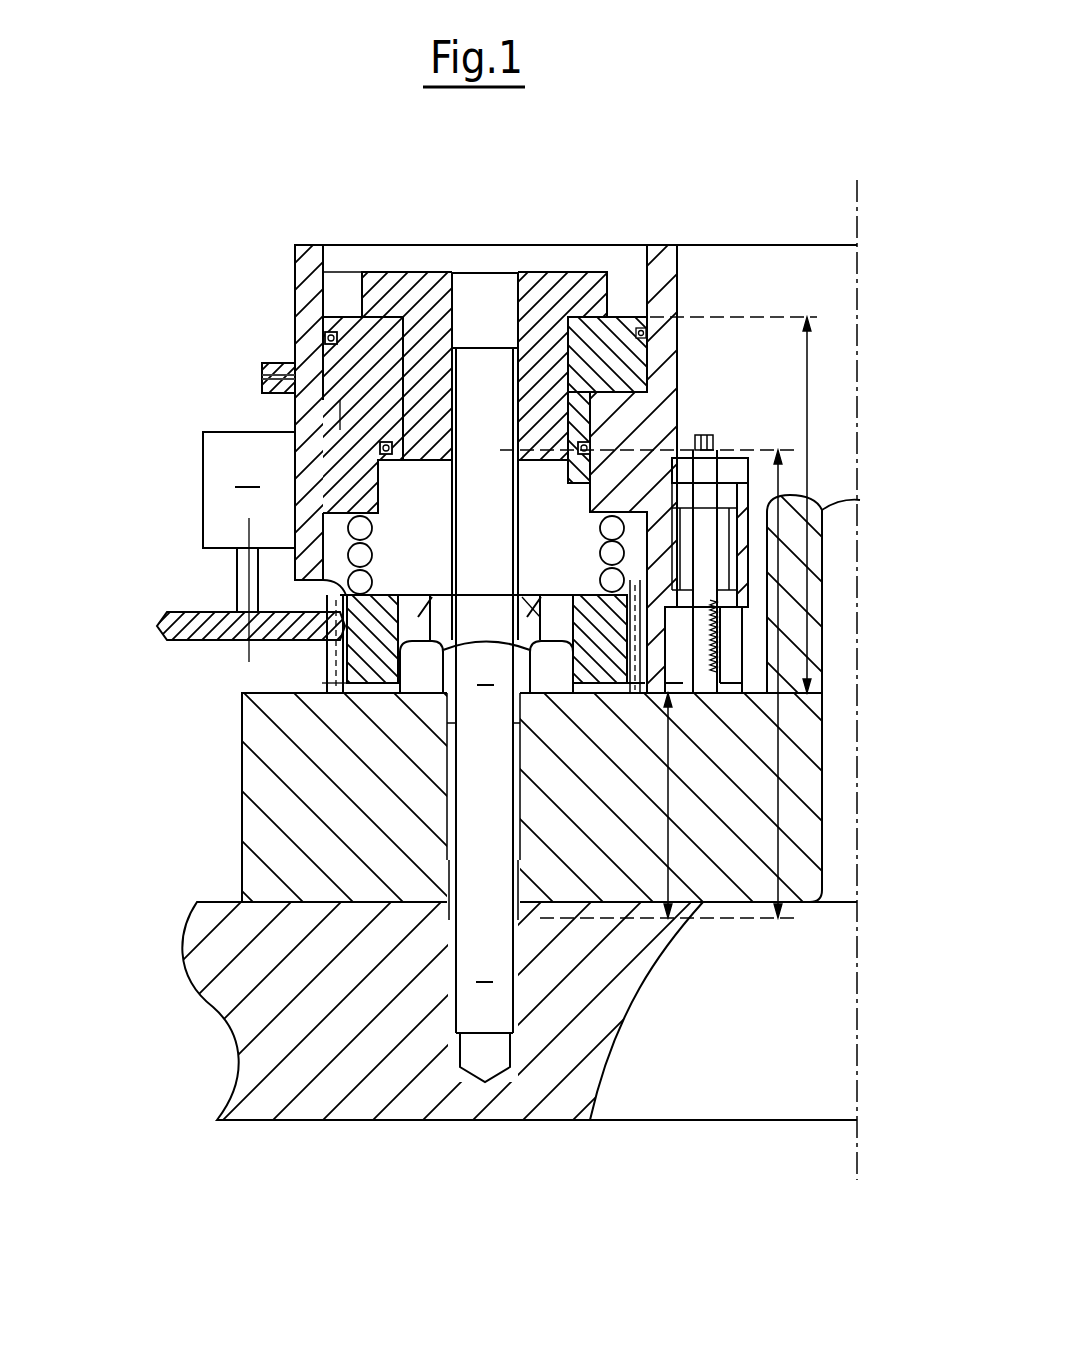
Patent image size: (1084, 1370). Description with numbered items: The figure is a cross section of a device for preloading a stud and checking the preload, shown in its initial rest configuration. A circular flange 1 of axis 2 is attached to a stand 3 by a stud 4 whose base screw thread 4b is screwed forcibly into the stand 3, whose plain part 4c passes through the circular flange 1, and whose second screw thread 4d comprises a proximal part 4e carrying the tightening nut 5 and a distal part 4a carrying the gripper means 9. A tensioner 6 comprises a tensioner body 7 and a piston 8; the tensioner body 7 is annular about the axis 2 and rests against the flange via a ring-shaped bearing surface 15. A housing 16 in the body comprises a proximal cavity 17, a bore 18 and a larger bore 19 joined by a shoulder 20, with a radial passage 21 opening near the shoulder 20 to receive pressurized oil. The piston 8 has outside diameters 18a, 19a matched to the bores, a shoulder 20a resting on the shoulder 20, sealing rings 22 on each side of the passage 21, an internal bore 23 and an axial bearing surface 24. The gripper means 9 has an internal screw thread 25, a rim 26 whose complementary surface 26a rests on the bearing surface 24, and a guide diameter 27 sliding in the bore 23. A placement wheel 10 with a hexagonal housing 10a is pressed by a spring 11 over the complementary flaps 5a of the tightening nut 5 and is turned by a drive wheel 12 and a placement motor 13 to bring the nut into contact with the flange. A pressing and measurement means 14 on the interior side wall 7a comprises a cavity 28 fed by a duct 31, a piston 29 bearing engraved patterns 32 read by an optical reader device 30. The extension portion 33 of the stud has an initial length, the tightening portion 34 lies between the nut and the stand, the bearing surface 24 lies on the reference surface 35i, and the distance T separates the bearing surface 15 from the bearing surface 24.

The circular flange 1 is at (270, 840).
The axis 2 is at (858, 940).
The stand 3 is at (252, 1058).
The stud 4 is at (483, 677).
The distal part 4a is at (450, 390).
The base screw thread 4b is at (525, 995).
The plain part 4c is at (522, 818).
The second screw thread 4d is at (520, 530).
The proximal part 4e is at (540, 597).
The tightening nut 5 is at (486, 667).
The complementary flaps 5a is at (417, 680).
The tensioner 6 is at (240, 402).
The tensioner body 7 is at (300, 312).
The interior side wall 7a is at (677, 390).
The piston 8 is at (330, 352).
The gripper means 9 is at (362, 292).
The placement wheel 10 is at (330, 667).
The hexagonal housing 10a is at (400, 595).
The spring 11 is at (335, 600).
The drive wheel 12 is at (160, 622).
The placement motor 13 is at (249, 490).
The pressing and measurement means 14 is at (757, 490).
The bearing surface 15 is at (327, 703).
The housing 16 is at (340, 262).
The proximal cavity 17 is at (323, 568).
The bore 18 is at (378, 498).
The outside diameter 18a is at (358, 418).
The bore 19 is at (296, 246).
The outside diameter 19a is at (300, 295).
The shoulder 20 is at (300, 362).
The shoulder 20a is at (262, 395).
The radial passage 21 is at (265, 366).
The sealing ring 22 is at (325, 338).
The internal bore 23 is at (577, 367).
The axial bearing surface 24 is at (610, 363).
The internal screw thread 25 is at (498, 307).
The rim 26 is at (385, 320).
The complementary surface 26a is at (400, 320).
The guide diameter 27 is at (618, 330).
The cavity 28 is at (707, 530).
The piston 29 is at (790, 512).
The optical reader device 30 is at (735, 625).
The duct 31 is at (703, 433).
The engraved patterns 32 is at (712, 650).
The extension portion 33 is at (800, 832).
The tightening portion 34 is at (668, 826).
The reference surface 35i is at (742, 318).
The distance T is at (807, 382).